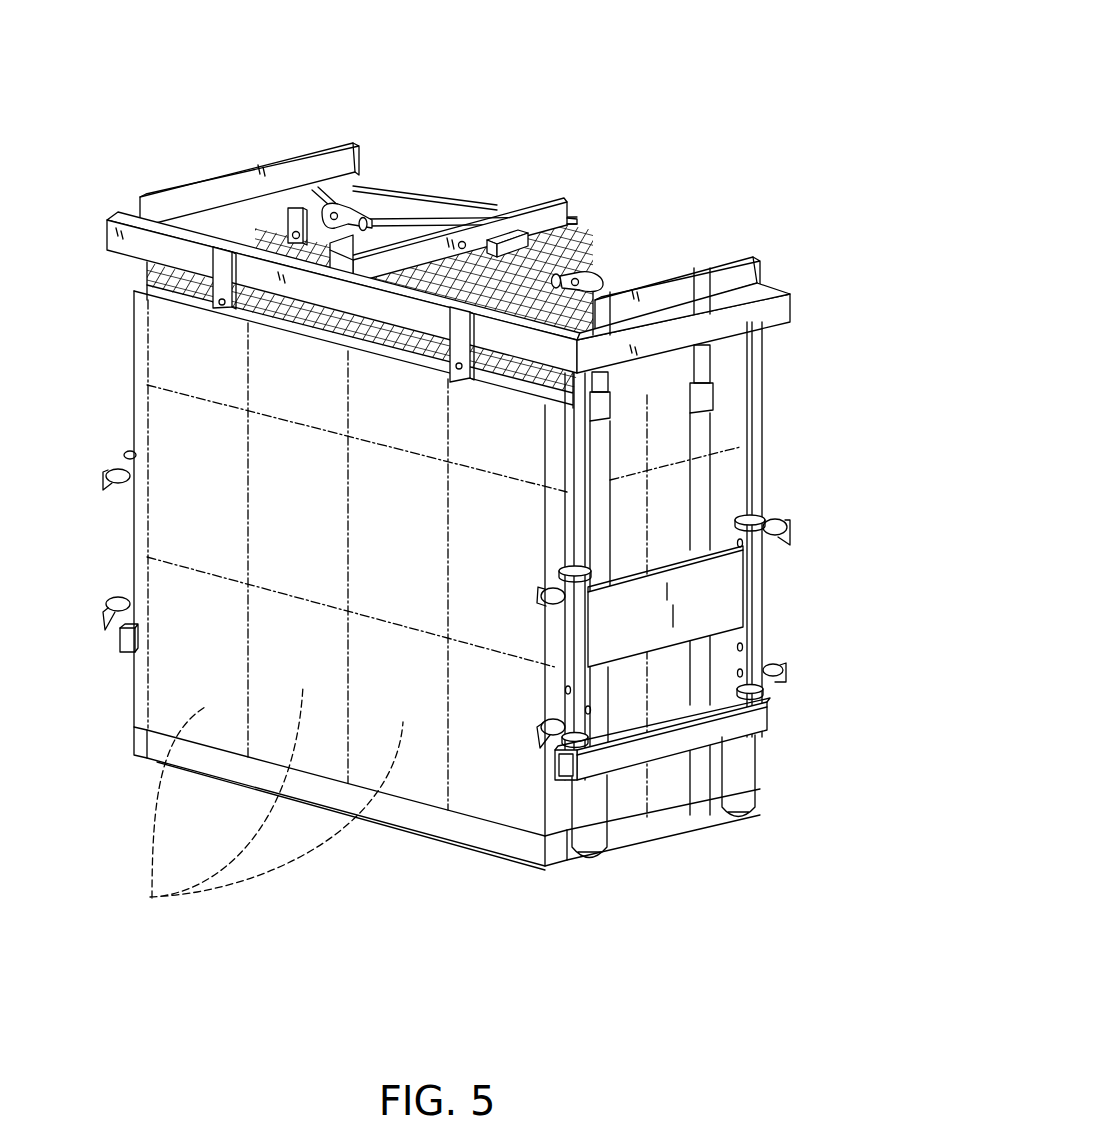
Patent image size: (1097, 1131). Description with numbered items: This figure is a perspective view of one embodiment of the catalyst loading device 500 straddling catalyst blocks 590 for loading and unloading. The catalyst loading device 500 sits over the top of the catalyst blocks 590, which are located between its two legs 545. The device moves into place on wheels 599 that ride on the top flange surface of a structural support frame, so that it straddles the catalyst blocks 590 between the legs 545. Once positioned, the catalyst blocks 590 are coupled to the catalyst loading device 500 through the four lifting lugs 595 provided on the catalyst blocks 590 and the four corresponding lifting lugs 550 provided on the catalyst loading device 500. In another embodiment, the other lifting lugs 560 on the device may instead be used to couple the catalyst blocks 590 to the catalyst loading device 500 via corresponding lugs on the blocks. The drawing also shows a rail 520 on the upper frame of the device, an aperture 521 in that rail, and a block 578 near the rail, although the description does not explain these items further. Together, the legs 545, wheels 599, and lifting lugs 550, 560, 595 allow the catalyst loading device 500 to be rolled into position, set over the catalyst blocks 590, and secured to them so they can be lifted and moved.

The catalyst loading device 500 is at (718, 85).
The rail 520 is at (545, 207).
The aperture 521 is at (466, 243).
The legs 545 is at (757, 482).
The lifting lugs 550 is at (297, 208).
The lifting lugs 560 is at (217, 268).
The stop block 578 is at (530, 233).
The catalyst blocks 590 is at (150, 897).
The lifting lugs 595 is at (350, 214).
The wheels 599 is at (590, 855).